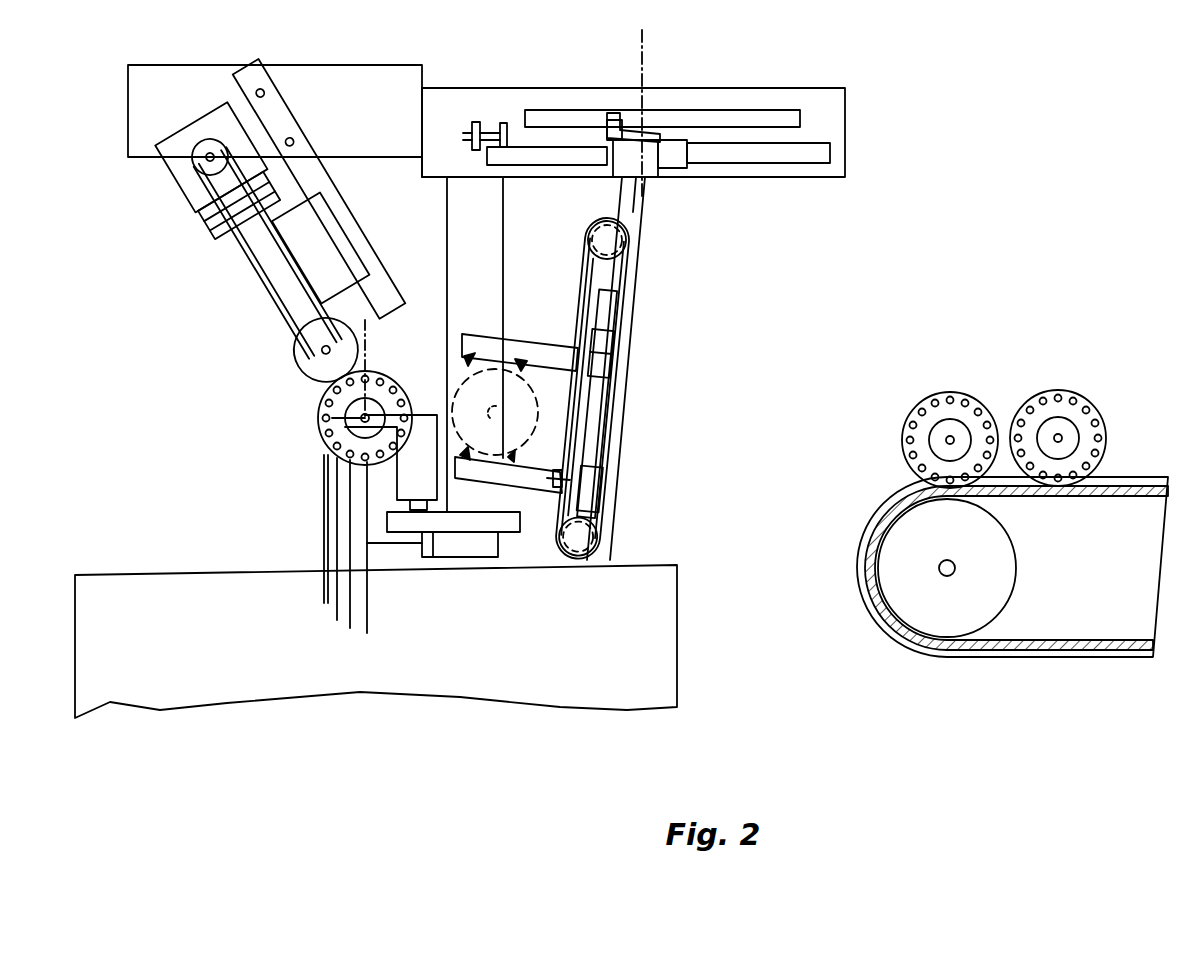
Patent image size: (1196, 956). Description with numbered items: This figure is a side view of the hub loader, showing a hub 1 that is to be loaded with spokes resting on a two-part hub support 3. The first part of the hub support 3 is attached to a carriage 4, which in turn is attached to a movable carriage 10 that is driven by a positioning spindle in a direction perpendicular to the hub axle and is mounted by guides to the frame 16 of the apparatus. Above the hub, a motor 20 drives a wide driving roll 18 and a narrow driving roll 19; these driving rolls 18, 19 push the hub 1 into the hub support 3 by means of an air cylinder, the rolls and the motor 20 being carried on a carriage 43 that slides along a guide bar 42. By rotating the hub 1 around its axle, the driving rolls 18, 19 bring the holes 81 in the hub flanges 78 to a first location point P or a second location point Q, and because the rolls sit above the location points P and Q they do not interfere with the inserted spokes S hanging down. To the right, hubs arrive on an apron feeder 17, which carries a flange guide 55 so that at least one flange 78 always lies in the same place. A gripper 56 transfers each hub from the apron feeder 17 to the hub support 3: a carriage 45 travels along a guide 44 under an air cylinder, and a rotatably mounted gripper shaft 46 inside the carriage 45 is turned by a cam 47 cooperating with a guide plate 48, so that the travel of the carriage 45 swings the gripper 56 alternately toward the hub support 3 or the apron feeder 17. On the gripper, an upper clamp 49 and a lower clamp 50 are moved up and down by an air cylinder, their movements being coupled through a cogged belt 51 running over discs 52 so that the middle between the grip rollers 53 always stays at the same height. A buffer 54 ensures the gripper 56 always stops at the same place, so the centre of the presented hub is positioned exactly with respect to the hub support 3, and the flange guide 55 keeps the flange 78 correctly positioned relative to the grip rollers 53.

The hub 1 is at (373, 375).
The hub support 3 is at (432, 426).
The carriage 4 is at (428, 497).
The movable carriage 10 is at (436, 530).
The frame 16 is at (464, 113).
The apron feeder 17 is at (1022, 443).
The wide driving roll 18 is at (275, 348).
The narrow driving roll 19 is at (275, 348).
The motor 20 is at (223, 257).
The support bar 42 is at (346, 173).
The carriage 43 is at (351, 223).
The guide 44 is at (820, 162).
The carriage 45 is at (668, 168).
The gripper shaft 46 is at (640, 213).
The cam 47 is at (612, 112).
The guide plate 48 is at (752, 115).
The upper clamp 49 is at (654, 358).
The lower clamp 50 is at (648, 486).
The cogged belt 51 is at (639, 393).
The discs 52 is at (653, 394).
The grip rollers 53 is at (518, 365).
The buffer 54 is at (502, 122).
The flange guide 55 is at (1143, 478).
The gripper 56 is at (675, 430).
The hub flanges 78 is at (327, 435).
The holes 81 is at (320, 400).
The spokes S is at (333, 513).
The first location point P is at (270, 413).
The second location point Q is at (320, 418).